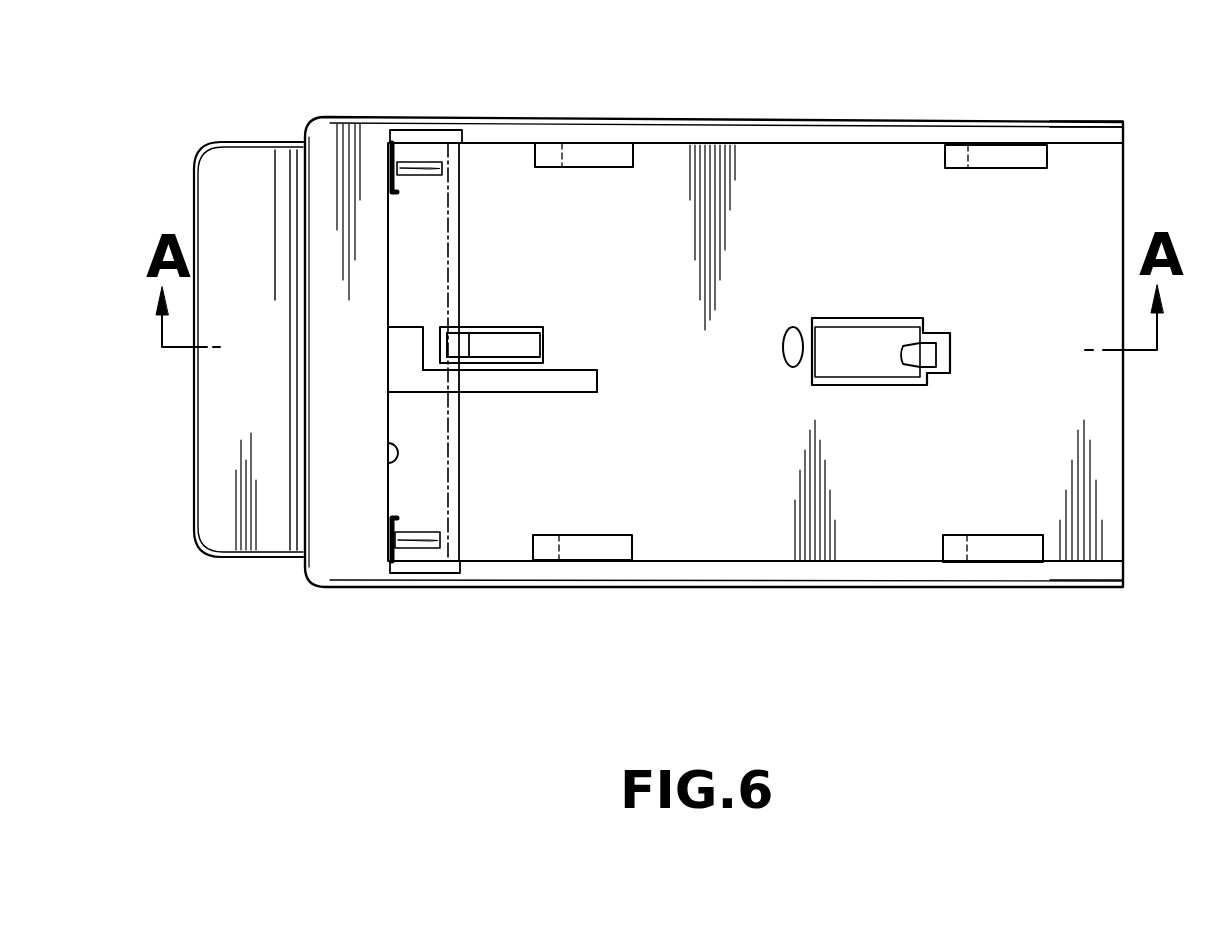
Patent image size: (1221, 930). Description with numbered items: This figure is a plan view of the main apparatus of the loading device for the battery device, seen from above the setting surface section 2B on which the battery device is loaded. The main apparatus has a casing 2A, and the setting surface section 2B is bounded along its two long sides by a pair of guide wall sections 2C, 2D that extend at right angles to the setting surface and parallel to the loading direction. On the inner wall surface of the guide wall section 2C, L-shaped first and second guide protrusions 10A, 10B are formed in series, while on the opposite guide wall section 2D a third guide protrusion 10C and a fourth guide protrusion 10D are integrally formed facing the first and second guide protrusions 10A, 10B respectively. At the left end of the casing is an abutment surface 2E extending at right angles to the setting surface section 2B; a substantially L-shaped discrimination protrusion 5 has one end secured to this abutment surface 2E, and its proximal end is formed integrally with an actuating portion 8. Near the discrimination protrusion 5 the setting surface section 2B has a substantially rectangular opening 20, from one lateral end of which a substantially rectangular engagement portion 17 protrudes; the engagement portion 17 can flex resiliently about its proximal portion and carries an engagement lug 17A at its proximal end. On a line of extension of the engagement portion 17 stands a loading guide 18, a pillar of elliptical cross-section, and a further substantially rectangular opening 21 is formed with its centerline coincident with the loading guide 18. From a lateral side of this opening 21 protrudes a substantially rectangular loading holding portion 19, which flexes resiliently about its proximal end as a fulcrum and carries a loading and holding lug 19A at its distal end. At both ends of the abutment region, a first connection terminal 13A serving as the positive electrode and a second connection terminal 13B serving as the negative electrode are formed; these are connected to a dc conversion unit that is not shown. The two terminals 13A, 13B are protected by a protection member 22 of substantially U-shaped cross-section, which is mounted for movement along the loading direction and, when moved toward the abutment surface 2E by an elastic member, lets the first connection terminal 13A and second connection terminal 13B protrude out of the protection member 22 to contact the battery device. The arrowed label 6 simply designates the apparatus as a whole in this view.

The casing 2A is at (330, 117).
The setting surface section 2B is at (1093, 252).
The guide wall section 2C is at (1083, 132).
The guide wall section 2D is at (1097, 575).
The abutment surface 2E is at (390, 467).
The discrimination protrusion 5 is at (581, 383).
The cartridge housing 6 is at (960, 6).
The actuating portion 8 is at (437, 326).
The first guide protrusion 10A is at (605, 155).
The second guide protrusion 10B is at (1003, 155).
The third guide protrusion 10C is at (603, 550).
The fourth guide protrusion 10D is at (1000, 550).
The first connection terminal 13A is at (445, 165).
The second connection terminal 13B is at (440, 540).
The engagement portion 17 is at (512, 345).
The engagement lug 17A is at (472, 332).
The loading guide 18 is at (795, 325).
The loading holding portion 19 is at (857, 343).
The loading and holding lug 19A is at (928, 350).
The opening 20 is at (548, 328).
The opening 21 is at (953, 335).
The protection member 22 is at (460, 447).